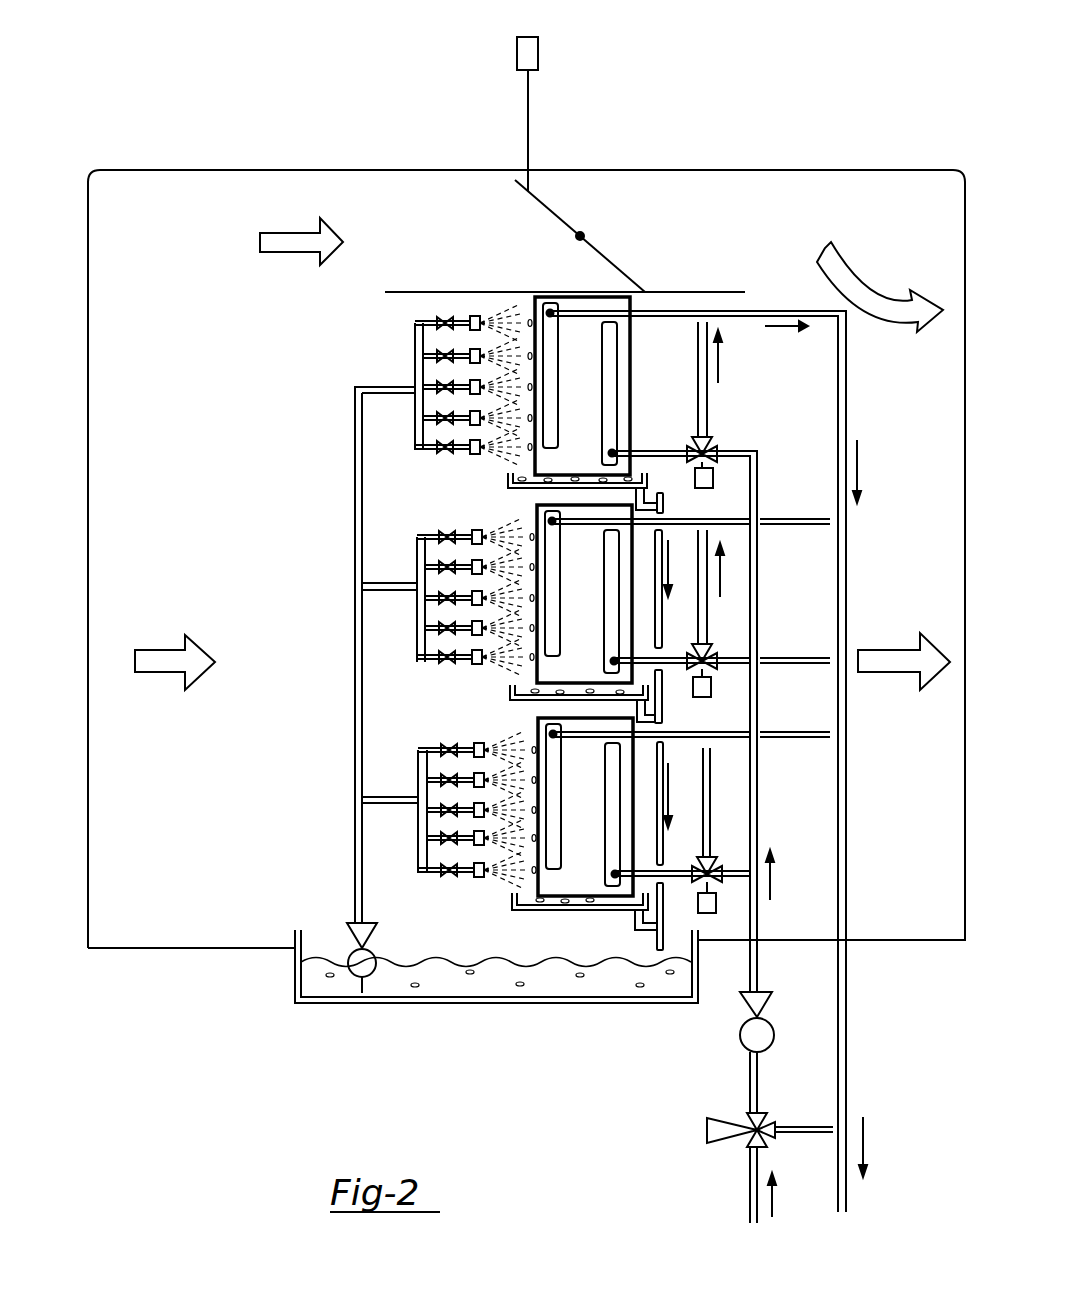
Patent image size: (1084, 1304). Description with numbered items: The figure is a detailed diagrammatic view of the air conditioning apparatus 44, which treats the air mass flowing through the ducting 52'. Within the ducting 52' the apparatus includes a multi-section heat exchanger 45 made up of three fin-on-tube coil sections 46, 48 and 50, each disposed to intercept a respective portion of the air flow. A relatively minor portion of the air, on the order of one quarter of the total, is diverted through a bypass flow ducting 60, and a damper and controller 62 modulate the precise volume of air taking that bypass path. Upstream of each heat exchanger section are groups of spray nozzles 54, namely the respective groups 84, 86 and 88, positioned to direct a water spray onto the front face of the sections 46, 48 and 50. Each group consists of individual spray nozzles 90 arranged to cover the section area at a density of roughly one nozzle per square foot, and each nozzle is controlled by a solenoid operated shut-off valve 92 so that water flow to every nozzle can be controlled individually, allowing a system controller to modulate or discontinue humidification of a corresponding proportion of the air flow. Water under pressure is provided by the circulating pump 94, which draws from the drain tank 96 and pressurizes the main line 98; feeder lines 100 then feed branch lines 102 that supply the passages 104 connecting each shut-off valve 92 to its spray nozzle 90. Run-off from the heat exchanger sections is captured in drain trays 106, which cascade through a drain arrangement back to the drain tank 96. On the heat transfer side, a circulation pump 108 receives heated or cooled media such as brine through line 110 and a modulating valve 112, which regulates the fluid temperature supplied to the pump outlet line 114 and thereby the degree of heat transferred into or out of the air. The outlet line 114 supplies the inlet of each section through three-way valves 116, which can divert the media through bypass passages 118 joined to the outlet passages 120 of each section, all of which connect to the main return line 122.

The air conditioning apparatus 44 is at (234, 222).
The multi-section heat exchanger 45 is at (778, 290).
The heat exchanger section 46 is at (630, 300).
The heat exchanger section 48 is at (632, 620).
The heat exchanger section 50 is at (633, 810).
The ducting 52' is at (526, 543).
The spray nozzles 54 is at (432, 569).
The bypass flow ducting 60 is at (528, 243).
The damper and controller 62 is at (578, 52).
The spray nozzle group 84 is at (408, 346).
The spray nozzle group 86 is at (411, 568).
The spray nozzle group 88 is at (403, 780).
The spray nozzle 90 is at (480, 350).
The solenoid operated shut-off valve 92 is at (444, 350).
The circulating pump 94 is at (377, 928).
The drain tank 96 is at (295, 992).
The main line 98 is at (355, 835).
The feeder line 100 is at (353, 386).
The branch line 102 is at (415, 449).
The passage 104 is at (415, 321).
The drain tray 106 is at (653, 490).
The circulation pump 108 is at (774, 1040).
The line 110 is at (752, 1196).
The modulating valve 112 is at (746, 1114).
The outlet line 114 is at (757, 926).
The three-way valve 116 is at (716, 436).
The bypass passage 118 is at (698, 408).
The outlet passage 120 is at (672, 325).
The main return line 122 is at (838, 364).